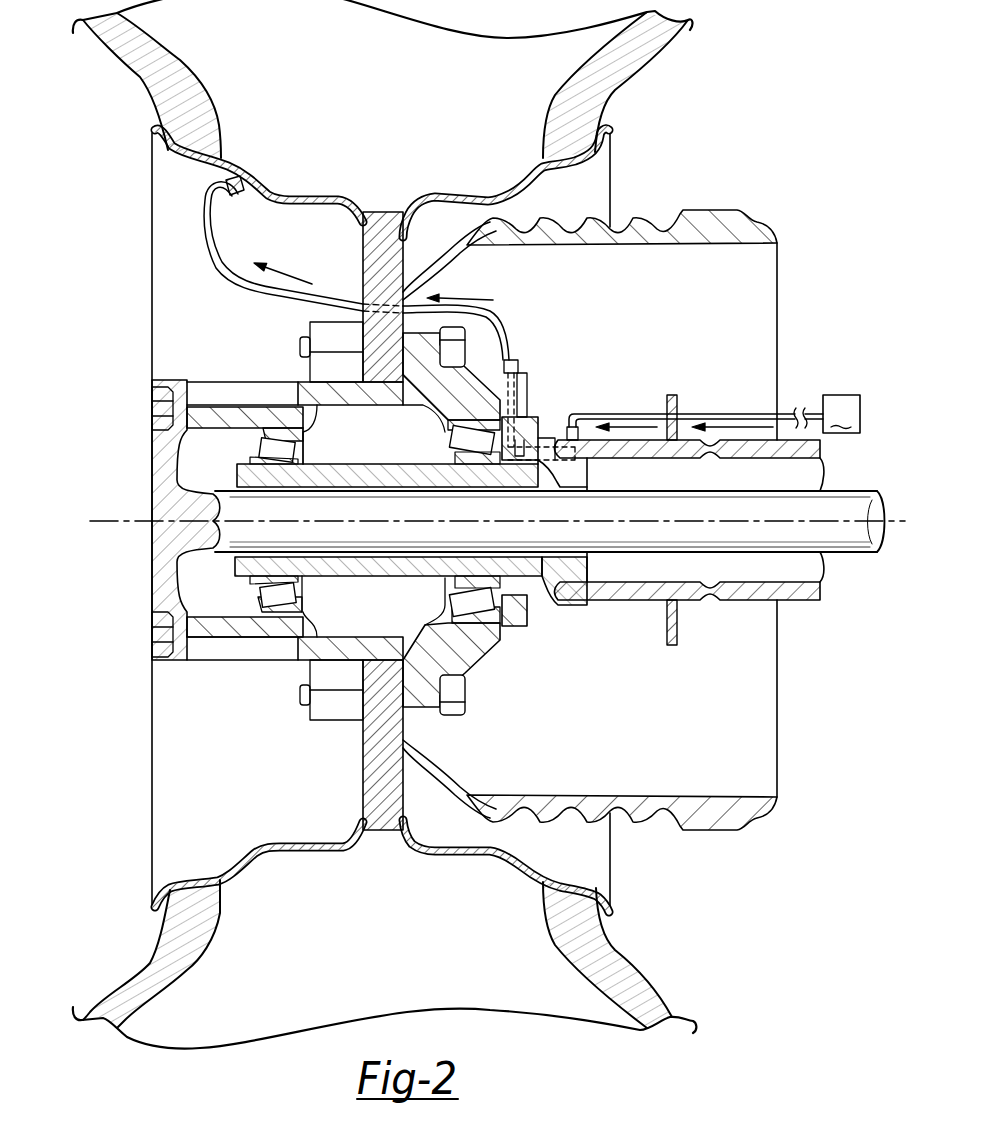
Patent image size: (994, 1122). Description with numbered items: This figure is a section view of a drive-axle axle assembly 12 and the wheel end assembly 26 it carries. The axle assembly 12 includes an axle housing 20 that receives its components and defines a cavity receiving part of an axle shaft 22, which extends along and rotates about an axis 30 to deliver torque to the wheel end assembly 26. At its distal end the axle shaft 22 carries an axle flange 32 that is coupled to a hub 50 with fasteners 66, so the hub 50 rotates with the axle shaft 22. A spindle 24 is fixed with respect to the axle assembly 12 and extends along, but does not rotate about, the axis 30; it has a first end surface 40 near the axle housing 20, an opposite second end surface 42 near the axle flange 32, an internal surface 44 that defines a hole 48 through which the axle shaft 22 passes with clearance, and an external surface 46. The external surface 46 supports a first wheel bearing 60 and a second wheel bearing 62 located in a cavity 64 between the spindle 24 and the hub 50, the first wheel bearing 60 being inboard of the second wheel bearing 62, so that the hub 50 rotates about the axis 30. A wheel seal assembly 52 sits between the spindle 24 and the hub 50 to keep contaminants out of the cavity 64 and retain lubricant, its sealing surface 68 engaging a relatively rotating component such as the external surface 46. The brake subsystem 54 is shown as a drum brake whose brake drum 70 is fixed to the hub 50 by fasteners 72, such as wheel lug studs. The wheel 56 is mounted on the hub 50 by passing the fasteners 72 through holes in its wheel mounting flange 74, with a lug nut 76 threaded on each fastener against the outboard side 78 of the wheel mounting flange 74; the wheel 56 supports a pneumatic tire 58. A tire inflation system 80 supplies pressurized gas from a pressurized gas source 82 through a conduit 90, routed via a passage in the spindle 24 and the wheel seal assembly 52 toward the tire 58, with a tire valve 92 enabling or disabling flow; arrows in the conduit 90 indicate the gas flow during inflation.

The axle assembly 12 is at (805, 672).
The axle housing 20 is at (797, 604).
The axle shaft 22 is at (700, 553).
The spindle 24 is at (548, 605).
The wheel end assembly 26 is at (120, 207).
The axis 30 is at (135, 525).
The axle flange 32 is at (152, 490).
The first end surface 40 is at (597, 605).
The second end surface 42 is at (240, 568).
The internal surface 44 is at (350, 487).
The external surface 46 is at (410, 438).
The hole 48 is at (573, 480).
The hub 50 is at (300, 378).
The wheel seal assembly 52 is at (525, 442).
The brake subsystem 54 is at (783, 213).
The wheel 56 is at (150, 296).
The tire 58 is at (157, 95).
The first wheel bearing 60 is at (470, 440).
The second wheel bearing 62 is at (255, 454).
The cavity 64 is at (352, 623).
The fasteners 66 is at (152, 410).
The sealing surface 68 is at (524, 455).
The brake drum 70 is at (679, 220).
The fasteners 72 is at (458, 350).
The wheel mounting flange 74 is at (363, 250).
The lug nut 76 is at (315, 332).
The outboard side 78 is at (350, 777).
The tire inflation system 80 is at (807, 362).
The pressurized gas source 82 is at (841, 414).
The conduit 90 is at (607, 410).
The tire valve 92 is at (214, 181).